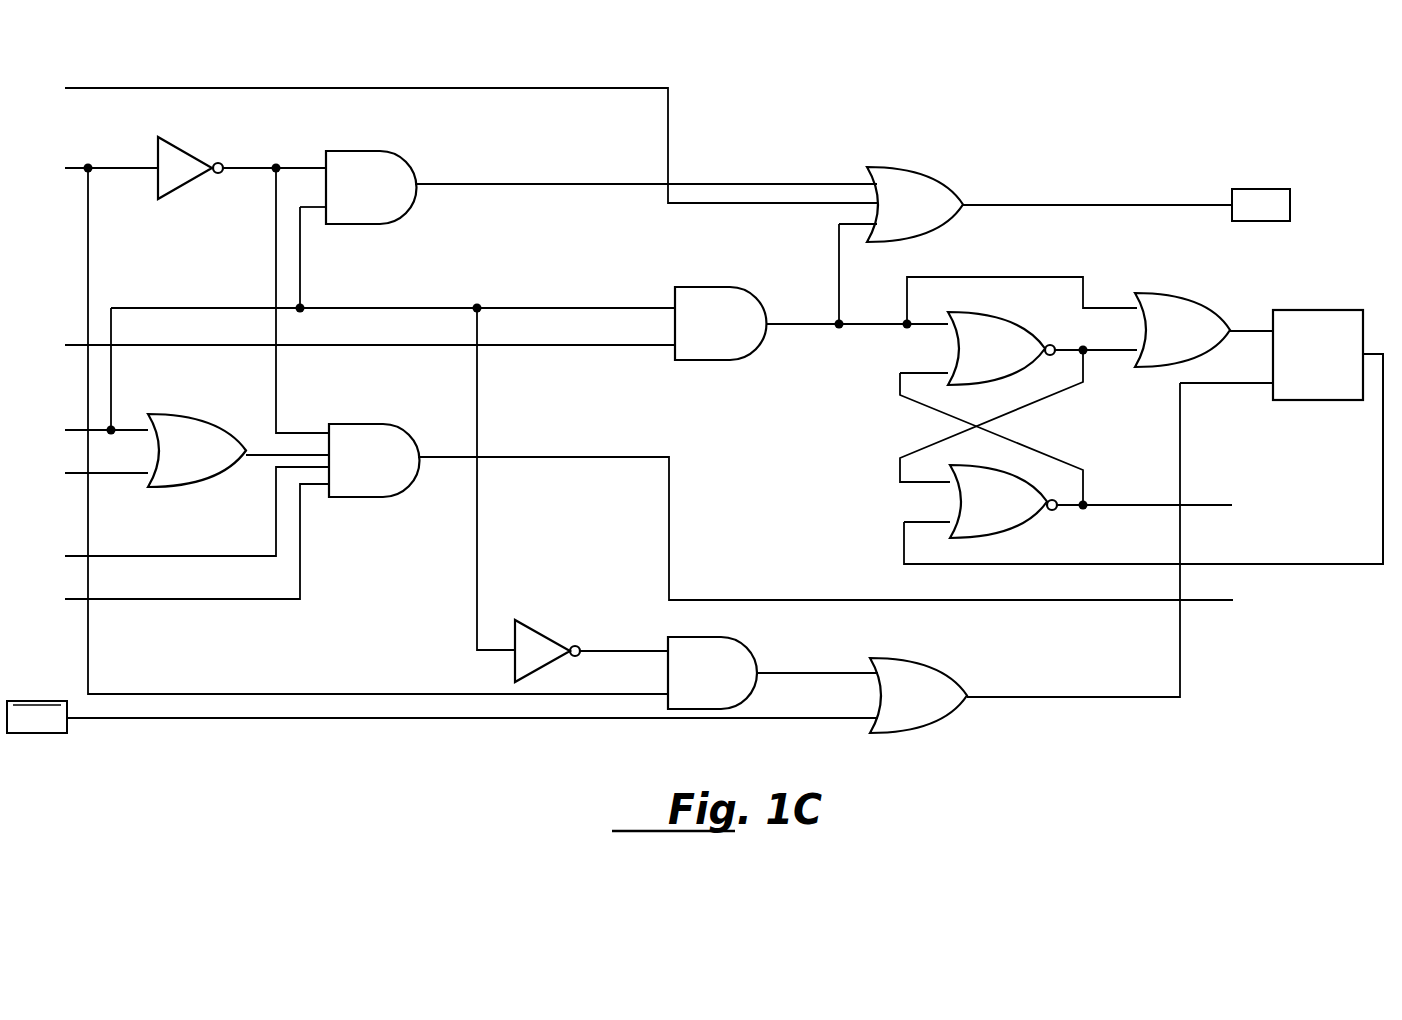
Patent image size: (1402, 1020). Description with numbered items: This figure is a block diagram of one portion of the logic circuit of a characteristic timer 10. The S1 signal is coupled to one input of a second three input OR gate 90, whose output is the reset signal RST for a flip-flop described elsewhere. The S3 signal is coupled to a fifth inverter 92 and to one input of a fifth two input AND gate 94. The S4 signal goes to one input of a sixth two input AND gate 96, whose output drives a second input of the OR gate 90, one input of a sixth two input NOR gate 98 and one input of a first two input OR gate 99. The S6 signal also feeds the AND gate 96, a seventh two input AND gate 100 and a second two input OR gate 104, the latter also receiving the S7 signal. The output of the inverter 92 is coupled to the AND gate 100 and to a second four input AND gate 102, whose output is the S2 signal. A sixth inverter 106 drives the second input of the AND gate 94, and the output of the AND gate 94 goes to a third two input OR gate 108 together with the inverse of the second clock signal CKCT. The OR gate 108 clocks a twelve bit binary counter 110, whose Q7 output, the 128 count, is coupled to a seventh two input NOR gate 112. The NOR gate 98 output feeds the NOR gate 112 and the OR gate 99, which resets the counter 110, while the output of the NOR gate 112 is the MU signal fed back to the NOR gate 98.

The characteristic timer 10 is at (942, 110).
The second three input OR gate 90 is at (940, 190).
The fifth inverter 92 is at (180, 160).
The fifth two input AND gate 94 is at (737, 662).
The sixth two input AND gate 96 is at (740, 305).
The sixth two input NOR gate 98 is at (1007, 330).
The first two input OR gate 99 is at (1185, 312).
The seventh two input AND gate 100 is at (400, 172).
The second four input AND gate 102 is at (390, 434).
The second two input OR gate 104 is at (205, 425).
The sixth inverter 106 is at (545, 640).
The third two input OR gate 108 is at (942, 688).
The 12 bit binary counter 110 is at (1322, 320).
The seventh two input NOR gate 112 is at (1017, 512).
The 128 count 128 is at (1143, 453).